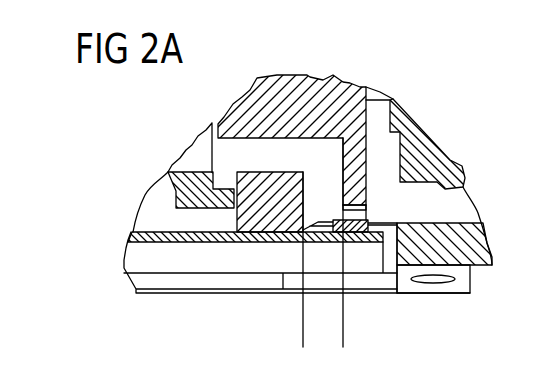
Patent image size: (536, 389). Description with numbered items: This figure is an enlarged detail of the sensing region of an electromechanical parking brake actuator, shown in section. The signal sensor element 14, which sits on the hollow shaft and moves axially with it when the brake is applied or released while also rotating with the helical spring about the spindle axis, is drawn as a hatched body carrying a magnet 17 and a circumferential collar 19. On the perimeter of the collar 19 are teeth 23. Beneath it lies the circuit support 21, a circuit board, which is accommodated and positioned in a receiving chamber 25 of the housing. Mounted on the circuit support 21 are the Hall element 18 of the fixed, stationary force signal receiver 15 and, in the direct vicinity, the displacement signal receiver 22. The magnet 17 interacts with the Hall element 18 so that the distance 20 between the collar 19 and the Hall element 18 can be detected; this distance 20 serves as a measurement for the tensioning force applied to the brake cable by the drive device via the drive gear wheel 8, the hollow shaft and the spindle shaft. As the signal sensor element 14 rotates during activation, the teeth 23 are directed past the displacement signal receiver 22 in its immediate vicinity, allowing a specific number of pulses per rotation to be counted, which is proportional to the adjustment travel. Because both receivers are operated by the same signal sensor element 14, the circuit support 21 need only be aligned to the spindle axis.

The signal sensor element 14 is at (302, 88).
The force signal receiver 15 is at (236, 160).
The magnet 17 is at (353, 150).
The circumferential collar 19 is at (362, 163).
The drive gear wheel 8 is at (465, 189).
The receiving chamber 25 is at (152, 213).
The circuit support 21 is at (132, 240).
The Hall element 18 is at (263, 220).
The teeth 23 is at (365, 208).
The displacement signal receiver 22 is at (355, 230).
The distance 20 is at (270, 340).